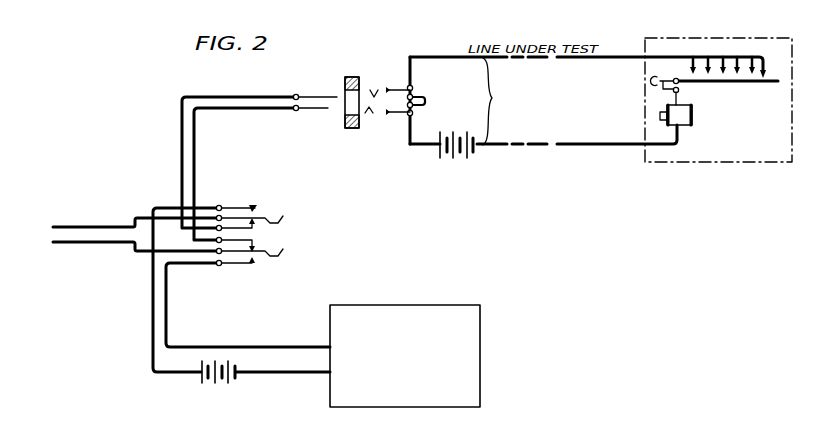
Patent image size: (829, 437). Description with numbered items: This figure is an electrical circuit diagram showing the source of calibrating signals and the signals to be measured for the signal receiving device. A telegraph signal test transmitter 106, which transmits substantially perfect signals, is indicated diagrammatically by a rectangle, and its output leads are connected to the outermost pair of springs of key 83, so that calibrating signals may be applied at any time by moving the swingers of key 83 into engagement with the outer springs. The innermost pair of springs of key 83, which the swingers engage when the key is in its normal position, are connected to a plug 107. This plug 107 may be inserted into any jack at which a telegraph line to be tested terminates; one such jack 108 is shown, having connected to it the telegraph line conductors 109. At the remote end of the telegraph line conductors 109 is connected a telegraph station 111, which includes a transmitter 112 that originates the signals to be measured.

The key 83 is at (267, 235).
The telegraph signal test transmitter 106 is at (450, 312).
The plug 107 is at (313, 99).
The jack 108 is at (395, 92).
The telegraph line conductors 109 is at (501, 101).
The telegraph station 111 is at (715, 162).
The transmitter 112 is at (760, 70).